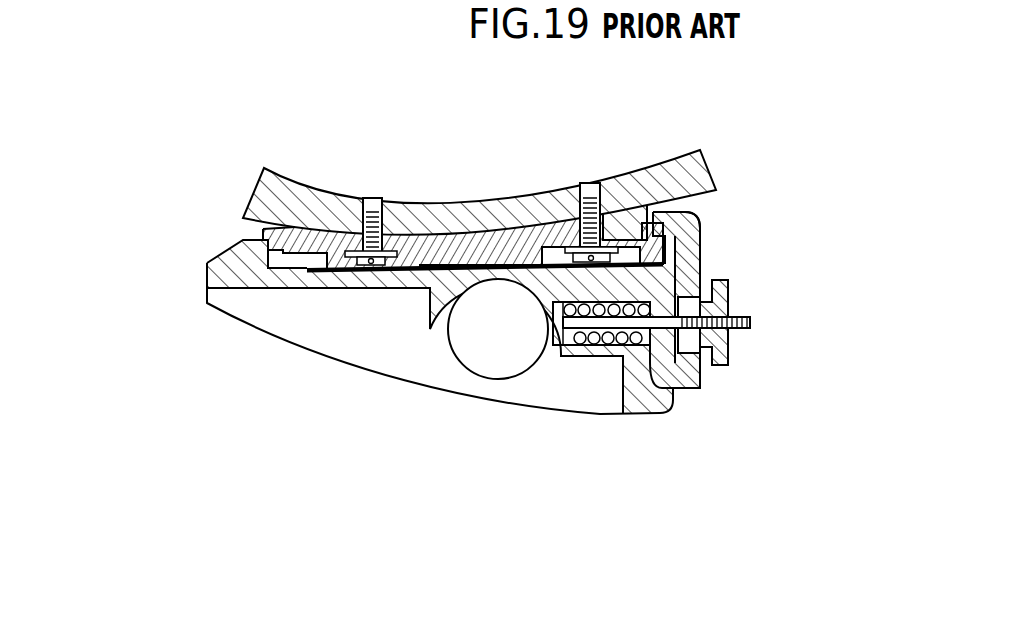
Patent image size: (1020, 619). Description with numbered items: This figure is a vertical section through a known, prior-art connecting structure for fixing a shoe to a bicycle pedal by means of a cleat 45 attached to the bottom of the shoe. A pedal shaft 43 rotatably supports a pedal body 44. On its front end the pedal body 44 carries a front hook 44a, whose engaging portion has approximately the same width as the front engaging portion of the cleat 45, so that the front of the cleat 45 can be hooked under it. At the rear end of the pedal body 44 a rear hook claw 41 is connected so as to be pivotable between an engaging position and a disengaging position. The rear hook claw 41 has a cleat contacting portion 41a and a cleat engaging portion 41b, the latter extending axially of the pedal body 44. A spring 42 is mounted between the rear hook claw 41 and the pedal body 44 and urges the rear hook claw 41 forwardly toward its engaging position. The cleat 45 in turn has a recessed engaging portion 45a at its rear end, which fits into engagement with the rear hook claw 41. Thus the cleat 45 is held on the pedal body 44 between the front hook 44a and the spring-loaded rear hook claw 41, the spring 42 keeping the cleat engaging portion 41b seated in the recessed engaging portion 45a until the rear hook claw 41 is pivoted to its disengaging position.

The rear hook claw 41 is at (693, 268).
The cleat contacting portion 41a is at (613, 238).
The cleat engaging portion 41b is at (700, 238).
The spring 42 is at (593, 342).
The pedal shaft 43 is at (490, 347).
The pedal body 44 is at (361, 344).
The front hook 44a is at (267, 240).
The cleat 45 is at (452, 238).
The recessed engaging portion 45a is at (645, 236).